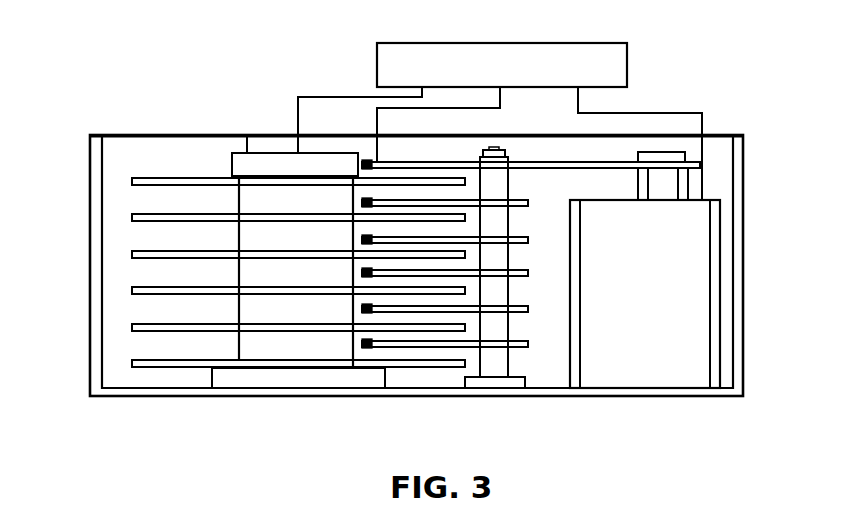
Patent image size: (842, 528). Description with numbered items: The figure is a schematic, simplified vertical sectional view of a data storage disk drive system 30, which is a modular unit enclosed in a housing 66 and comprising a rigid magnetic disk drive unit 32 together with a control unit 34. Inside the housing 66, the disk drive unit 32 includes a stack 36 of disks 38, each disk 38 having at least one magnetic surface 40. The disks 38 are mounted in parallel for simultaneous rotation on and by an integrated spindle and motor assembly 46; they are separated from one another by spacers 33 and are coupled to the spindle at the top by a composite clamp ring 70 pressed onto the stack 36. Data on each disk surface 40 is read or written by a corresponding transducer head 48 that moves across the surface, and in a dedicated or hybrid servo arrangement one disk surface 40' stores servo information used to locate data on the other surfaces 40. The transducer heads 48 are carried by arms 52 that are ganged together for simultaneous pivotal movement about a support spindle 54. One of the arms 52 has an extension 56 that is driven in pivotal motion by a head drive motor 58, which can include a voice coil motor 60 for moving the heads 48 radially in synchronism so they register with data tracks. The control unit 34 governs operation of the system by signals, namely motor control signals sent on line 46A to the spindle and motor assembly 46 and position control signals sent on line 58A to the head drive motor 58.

The data storage disk drive system 30 is at (746, 77).
The rigid magnetic disk drive unit 32 is at (271, 117).
The spacers 33 is at (237, 238).
The control unit 34 is at (624, 52).
The stack 36 is at (201, 155).
The disks 38 is at (132, 254).
The magnetic surface 40 is at (256, 201).
The servo disk surface 40' is at (263, 137).
The integrated spindle and motor assembly 46 is at (297, 342).
The motor control signal line 46A is at (357, 97).
The transducer heads 48 is at (366, 160).
The arms 52 is at (528, 206).
The support spindle 54 is at (510, 358).
The extension 56 is at (542, 163).
The head drive motor 58 is at (688, 265).
The position control signal line 58A is at (624, 110).
The voice coil motor 60 is at (690, 184).
The housing 66 is at (744, 332).
The composite clamp ring 70 is at (247, 133).